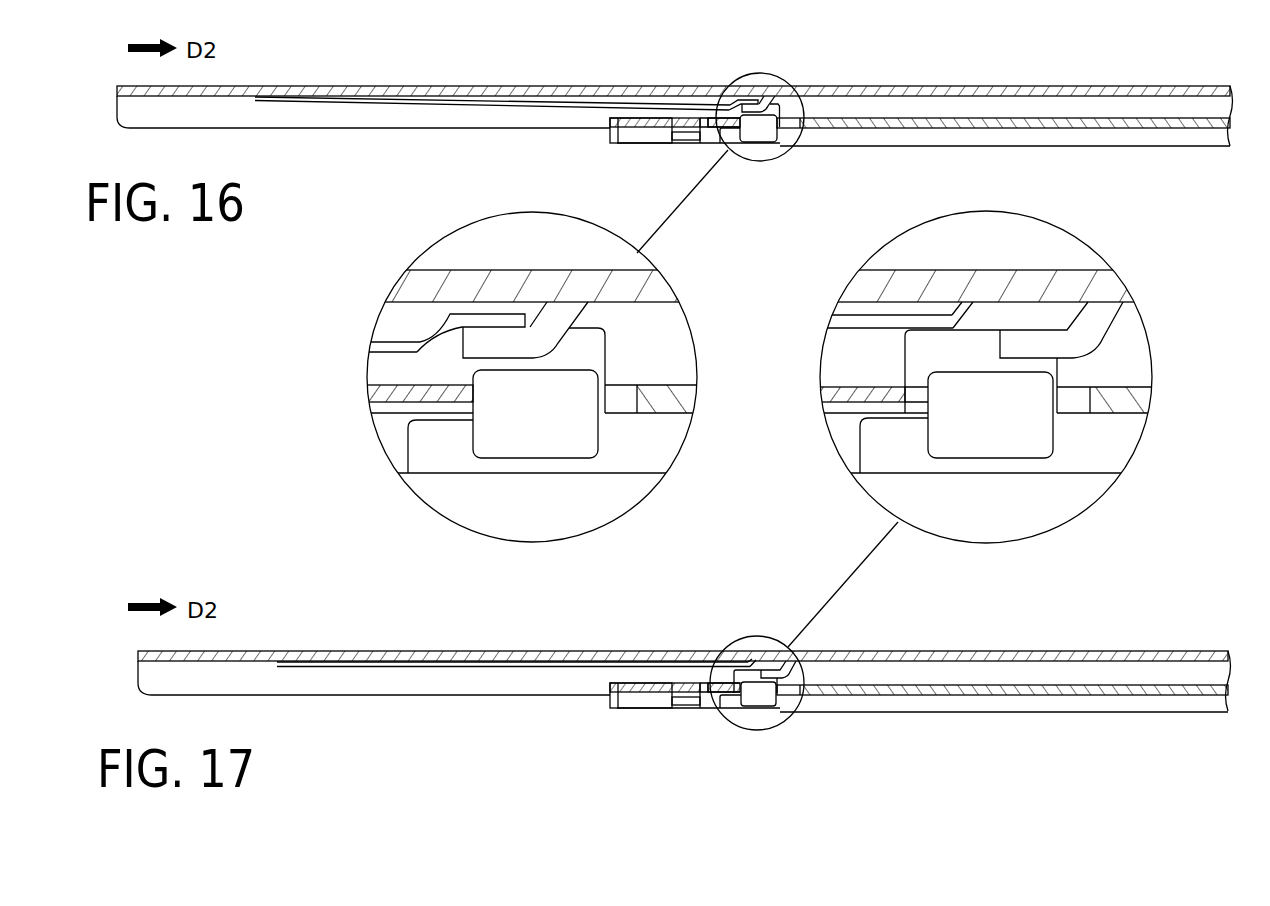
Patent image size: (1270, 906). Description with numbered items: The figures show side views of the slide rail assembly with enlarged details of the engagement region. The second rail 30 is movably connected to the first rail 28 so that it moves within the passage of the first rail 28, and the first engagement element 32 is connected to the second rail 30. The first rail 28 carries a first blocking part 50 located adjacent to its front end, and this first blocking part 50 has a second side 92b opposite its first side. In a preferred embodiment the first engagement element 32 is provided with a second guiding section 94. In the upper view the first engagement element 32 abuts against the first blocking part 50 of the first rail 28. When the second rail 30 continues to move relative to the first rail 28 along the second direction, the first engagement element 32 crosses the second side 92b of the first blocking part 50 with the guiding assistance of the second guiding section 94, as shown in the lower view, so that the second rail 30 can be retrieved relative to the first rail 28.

In FIG. 16, the first rail 28 is at (1146, 130).
In FIG. 17, the first rail 28 is at (1134, 697).
In FIG. 16, the second rail 30 is at (1206, 84).
In FIG. 17, the second rail 30 is at (1193, 649).
In FIG. 16, the first engagement element 32 is at (425, 104).
In FIG. 17, the first engagement element 32 is at (415, 669).
In FIG. 16, the first blocking part 50 is at (457, 358).
In FIG. 17, the first blocking part 50 is at (907, 355).
In FIG. 17, the second side 92b is at (912, 372).
In FIG. 16, the second guiding section 94 is at (435, 335).
In FIG. 17, the second guiding section 94 is at (963, 313).